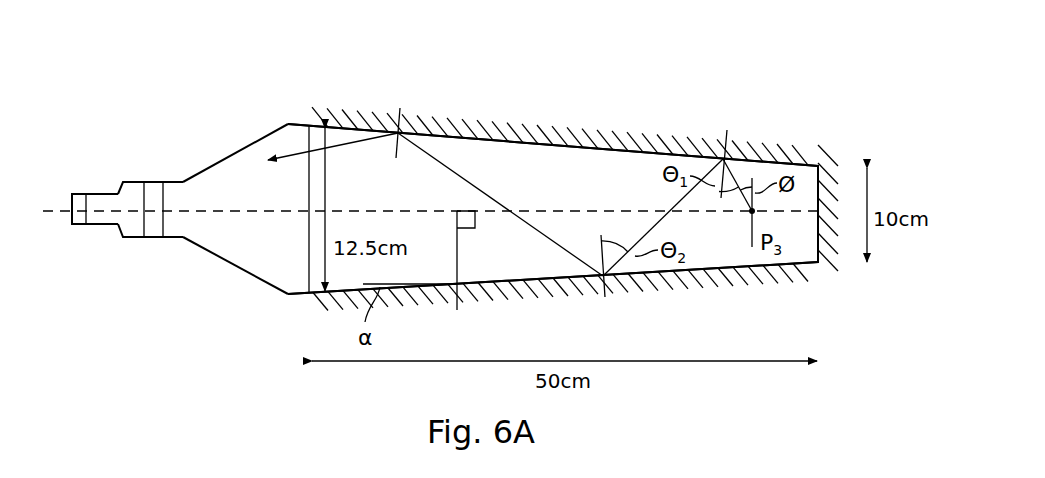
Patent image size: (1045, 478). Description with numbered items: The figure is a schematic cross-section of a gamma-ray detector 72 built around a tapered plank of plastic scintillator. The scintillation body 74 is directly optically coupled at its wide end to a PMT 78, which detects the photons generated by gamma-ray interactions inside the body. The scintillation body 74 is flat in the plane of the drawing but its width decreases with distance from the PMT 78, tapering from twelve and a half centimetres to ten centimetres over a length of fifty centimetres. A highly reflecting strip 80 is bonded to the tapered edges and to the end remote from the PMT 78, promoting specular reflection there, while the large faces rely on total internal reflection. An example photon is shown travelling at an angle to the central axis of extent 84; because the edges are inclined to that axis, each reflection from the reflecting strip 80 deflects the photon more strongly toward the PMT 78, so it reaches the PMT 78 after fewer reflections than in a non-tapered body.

The gamma-ray detector 72 is at (773, 96).
The scintillation body 74 is at (812, 185).
The PMT 78 is at (237, 268).
The reflecting strip 80 is at (534, 142).
The central axis of extent 84 is at (43, 209).